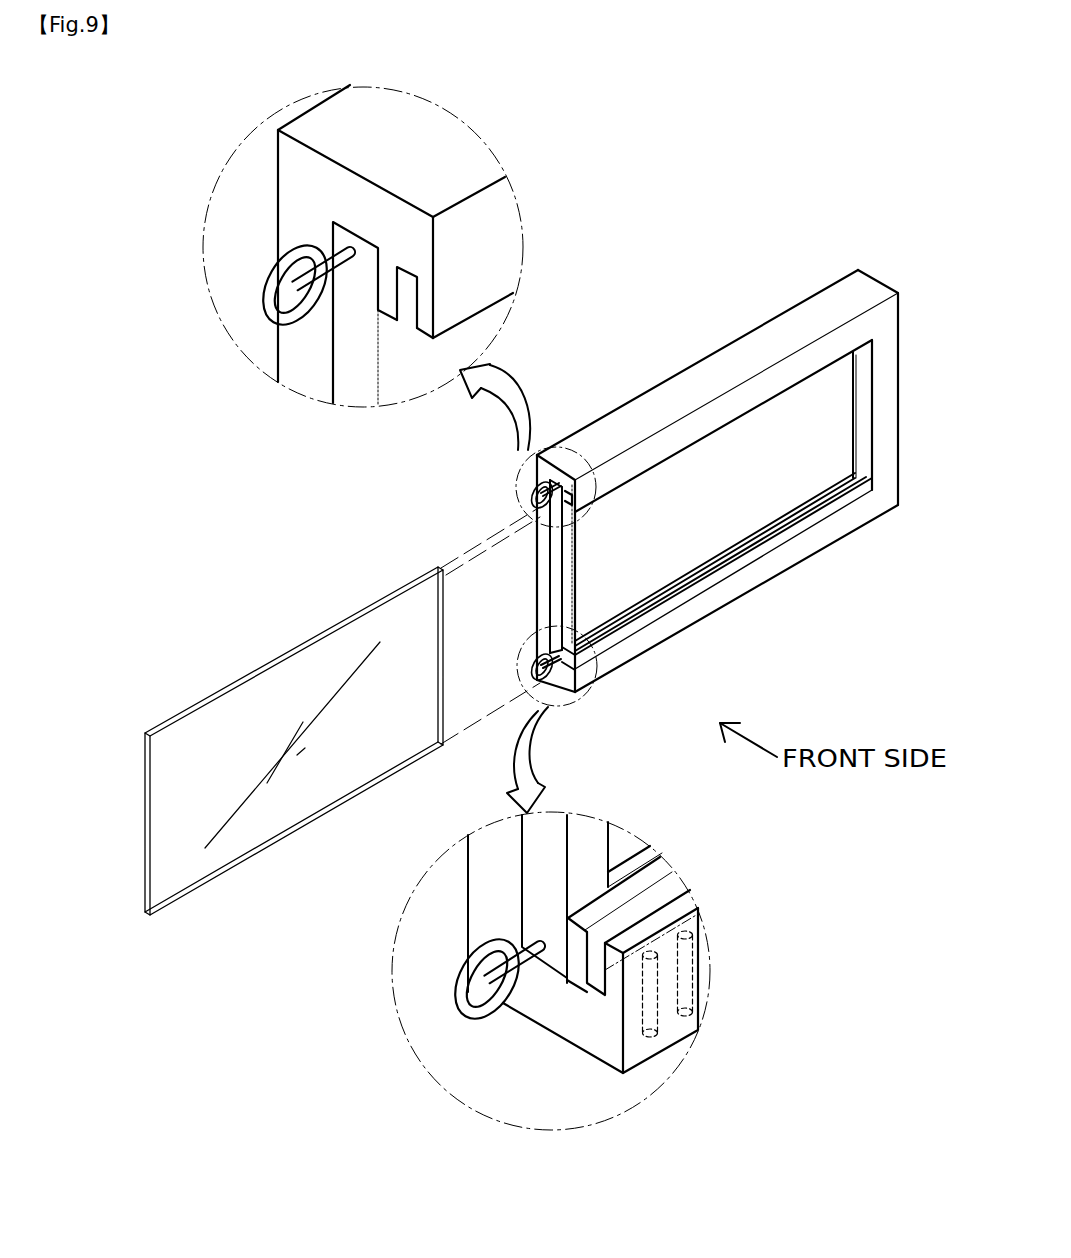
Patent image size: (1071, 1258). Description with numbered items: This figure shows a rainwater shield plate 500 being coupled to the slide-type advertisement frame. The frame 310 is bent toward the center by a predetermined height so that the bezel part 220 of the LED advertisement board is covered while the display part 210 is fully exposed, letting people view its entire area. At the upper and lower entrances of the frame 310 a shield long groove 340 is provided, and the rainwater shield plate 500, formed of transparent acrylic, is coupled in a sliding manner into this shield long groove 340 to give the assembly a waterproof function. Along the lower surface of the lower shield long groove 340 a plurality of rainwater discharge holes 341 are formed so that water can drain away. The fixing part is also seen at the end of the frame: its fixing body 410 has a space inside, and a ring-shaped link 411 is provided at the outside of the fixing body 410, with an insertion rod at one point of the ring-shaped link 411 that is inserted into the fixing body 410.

The display part 210 is at (818, 475).
The bezel part 220 is at (347, 380).
The frame 310 is at (300, 178).
The shield long groove 340 is at (414, 297).
The rainwater discharge holes 341 is at (687, 993).
The fixing body 410 is at (344, 293).
The ring-shaped link 411 is at (273, 297).
The rainwater shield plate 500 is at (235, 703).